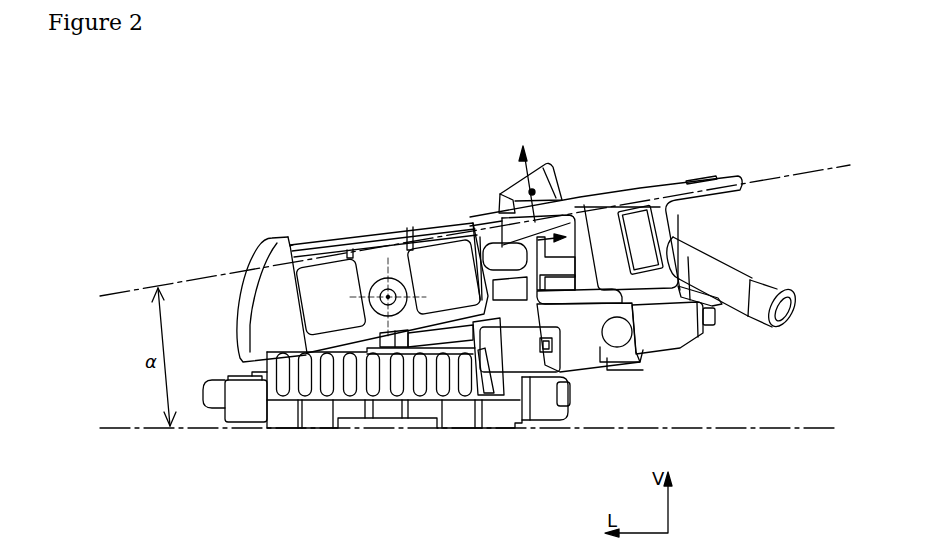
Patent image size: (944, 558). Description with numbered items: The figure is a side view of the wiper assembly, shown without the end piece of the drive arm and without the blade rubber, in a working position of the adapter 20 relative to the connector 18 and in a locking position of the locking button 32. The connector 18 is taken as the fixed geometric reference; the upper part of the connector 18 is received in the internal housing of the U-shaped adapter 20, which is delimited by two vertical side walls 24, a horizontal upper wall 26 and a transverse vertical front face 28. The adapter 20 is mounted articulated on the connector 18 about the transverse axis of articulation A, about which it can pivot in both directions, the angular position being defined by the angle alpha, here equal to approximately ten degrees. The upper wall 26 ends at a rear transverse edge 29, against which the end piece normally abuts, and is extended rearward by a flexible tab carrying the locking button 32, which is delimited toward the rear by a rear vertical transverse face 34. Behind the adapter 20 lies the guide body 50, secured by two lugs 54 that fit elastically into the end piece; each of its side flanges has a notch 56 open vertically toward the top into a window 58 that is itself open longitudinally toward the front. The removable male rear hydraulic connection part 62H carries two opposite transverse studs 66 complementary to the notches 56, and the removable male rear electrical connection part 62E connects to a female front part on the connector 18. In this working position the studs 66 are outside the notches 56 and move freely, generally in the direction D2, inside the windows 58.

The connector 18 is at (281, 436).
The adapter 20 is at (447, 221).
The vertical side walls 24 is at (333, 290).
The horizontal upper wall 26 is at (428, 224).
The transverse vertical front face 28 is at (240, 294).
The rear transverse edge 29 is at (288, 245).
The locking button 32 is at (548, 173).
The rear vertical transverse face 34 is at (566, 189).
The guide body 50 is at (702, 161).
The lugs 54 is at (572, 312).
The notch 56 is at (585, 200).
The window 58 is at (508, 198).
The removable male rear hydraulic connection part 62H is at (762, 268).
The removable male rear electrical connection part 62E is at (700, 348).
The transverse studs 66 is at (548, 284).
The transverse axis of articulation A is at (386, 290).
The direction of movement of the studs D2 is at (529, 189).